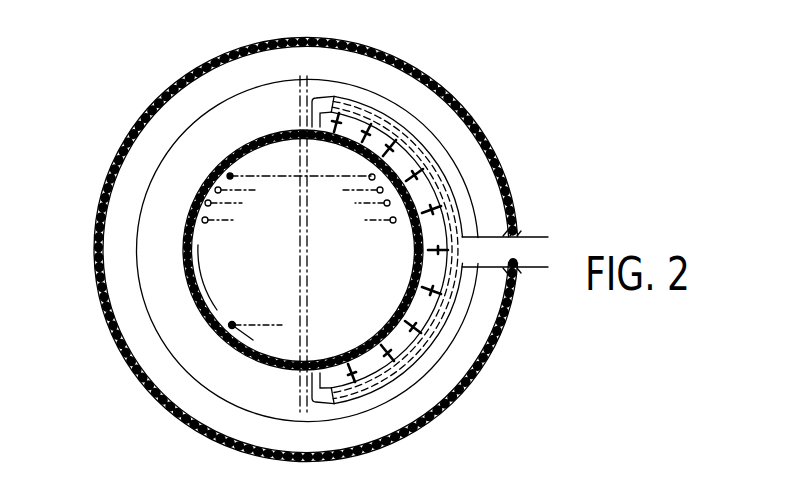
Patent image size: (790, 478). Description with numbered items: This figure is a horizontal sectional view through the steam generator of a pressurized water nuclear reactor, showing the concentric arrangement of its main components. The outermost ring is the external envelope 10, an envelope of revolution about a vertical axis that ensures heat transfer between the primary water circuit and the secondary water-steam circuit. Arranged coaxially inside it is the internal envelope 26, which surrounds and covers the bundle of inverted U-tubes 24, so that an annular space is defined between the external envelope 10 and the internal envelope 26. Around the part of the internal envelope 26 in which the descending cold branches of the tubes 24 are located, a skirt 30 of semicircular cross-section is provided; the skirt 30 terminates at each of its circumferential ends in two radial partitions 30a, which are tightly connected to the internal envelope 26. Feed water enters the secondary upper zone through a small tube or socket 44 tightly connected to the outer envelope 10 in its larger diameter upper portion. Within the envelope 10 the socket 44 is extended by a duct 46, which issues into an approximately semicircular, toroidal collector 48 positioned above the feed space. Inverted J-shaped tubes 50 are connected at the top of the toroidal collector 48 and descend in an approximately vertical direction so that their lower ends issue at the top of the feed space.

The external envelope 10 is at (148, 108).
The inverted U-tubes 24 is at (187, 252).
The internal envelope 26 is at (207, 176).
The skirt 30 is at (323, 97).
The radial partitions 30a is at (300, 110).
The socket 44 is at (520, 232).
The duct 46 is at (503, 228).
The toroidal collector 48 is at (395, 113).
The inverted J-shaped tubes 50 is at (405, 352).